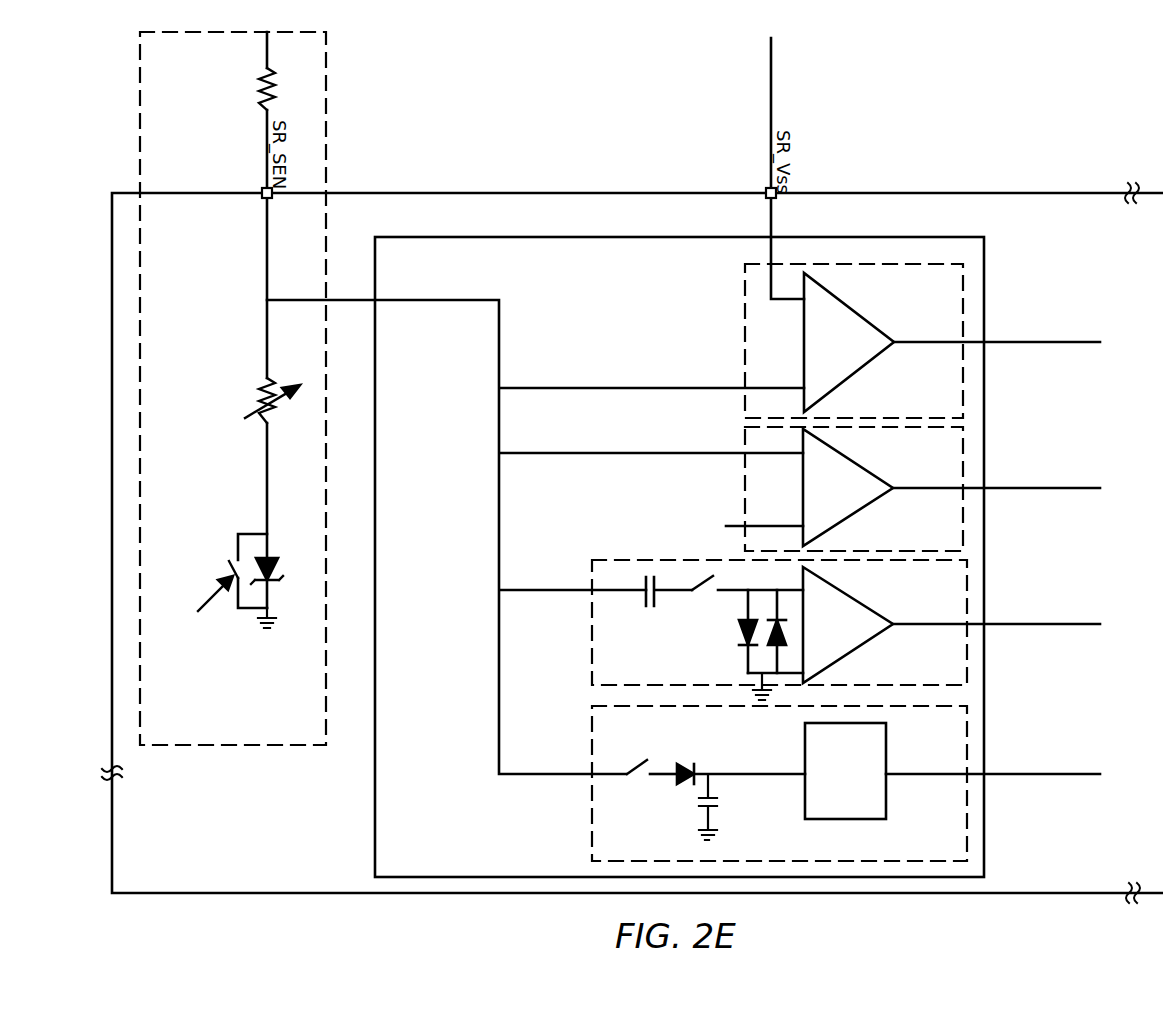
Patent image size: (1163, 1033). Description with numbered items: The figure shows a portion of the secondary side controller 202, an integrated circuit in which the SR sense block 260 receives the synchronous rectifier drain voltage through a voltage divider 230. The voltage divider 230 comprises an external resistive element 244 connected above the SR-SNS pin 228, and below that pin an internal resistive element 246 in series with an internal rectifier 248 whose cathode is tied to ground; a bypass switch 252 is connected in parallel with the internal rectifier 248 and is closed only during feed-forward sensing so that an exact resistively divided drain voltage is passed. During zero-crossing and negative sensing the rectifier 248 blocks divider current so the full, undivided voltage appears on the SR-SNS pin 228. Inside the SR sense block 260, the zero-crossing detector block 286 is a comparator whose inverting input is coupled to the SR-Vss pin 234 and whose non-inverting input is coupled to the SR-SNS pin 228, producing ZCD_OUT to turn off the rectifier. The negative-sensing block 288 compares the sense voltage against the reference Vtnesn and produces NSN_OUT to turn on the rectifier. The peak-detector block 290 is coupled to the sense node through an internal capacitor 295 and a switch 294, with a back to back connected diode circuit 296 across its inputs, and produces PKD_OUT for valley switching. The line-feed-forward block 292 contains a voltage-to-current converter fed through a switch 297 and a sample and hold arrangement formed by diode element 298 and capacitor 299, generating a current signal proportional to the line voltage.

The secondary side controller 202 is at (632, 543).
The voltage divider 230 is at (233, 388).
The external resistive element 244 is at (262, 72).
The SR-SNS pin 228 is at (262, 188).
The SR-Vss pin 234 is at (766, 188).
The internal resistive element 246 is at (257, 425).
The internal rectifier 248 is at (280, 562).
The bypass switch 252 is at (211, 583).
The SR sense block 260 is at (679, 557).
The zero-crossing detector (ZCD) block 286 is at (922, 341).
The negative-sensing (NSN) block 288 is at (915, 489).
The peak-detector (PKD) block 290 is at (846, 622).
The line-feed-forward (LFF) block 292 is at (846, 783).
The switch 294 is at (702, 583).
The internal capacitor 295 is at (648, 576).
The back to back connected diode circuit 296 is at (725, 637).
The switch 297 is at (636, 767).
The diode element 298 is at (683, 765).
The capacitor 299 is at (704, 814).